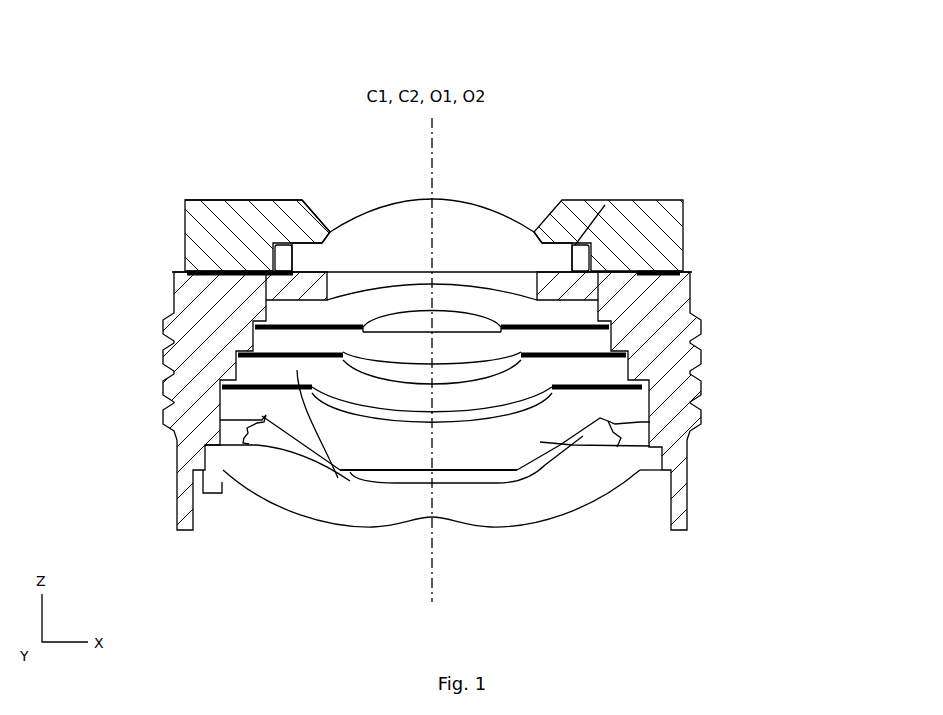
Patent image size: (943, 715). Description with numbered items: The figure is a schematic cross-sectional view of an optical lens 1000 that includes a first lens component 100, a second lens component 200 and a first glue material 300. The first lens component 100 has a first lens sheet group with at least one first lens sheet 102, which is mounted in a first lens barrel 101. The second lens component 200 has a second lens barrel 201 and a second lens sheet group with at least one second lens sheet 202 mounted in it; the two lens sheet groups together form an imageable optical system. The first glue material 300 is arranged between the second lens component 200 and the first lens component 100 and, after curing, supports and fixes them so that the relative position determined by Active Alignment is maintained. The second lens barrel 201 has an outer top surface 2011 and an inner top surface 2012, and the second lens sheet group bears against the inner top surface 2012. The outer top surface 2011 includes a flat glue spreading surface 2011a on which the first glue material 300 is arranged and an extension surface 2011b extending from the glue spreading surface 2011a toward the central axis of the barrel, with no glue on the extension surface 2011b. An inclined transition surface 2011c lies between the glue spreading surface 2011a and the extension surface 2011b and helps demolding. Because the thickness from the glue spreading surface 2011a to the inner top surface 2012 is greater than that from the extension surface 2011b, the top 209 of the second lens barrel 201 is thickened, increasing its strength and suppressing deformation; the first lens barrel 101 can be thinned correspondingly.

The optical lens 1000 is at (402, 53).
The first lens component 100 is at (550, 212).
The first lens barrel 101 is at (640, 198).
The first lens sheet 102 is at (467, 200).
The second lens component 200 is at (450, 373).
The second lens barrel 201 is at (391, 369).
The second lens sheet 202 is at (480, 314).
The top of the second lens barrel 209 is at (610, 220).
The first glue material 300 is at (688, 271).
The outer top surface 2011 is at (343, 210).
The glue spreading surface 2011a is at (210, 217).
The extension surface 2011b is at (328, 233).
The transition surface 2011c is at (282, 240).
The inner top surface 2012 is at (342, 478).